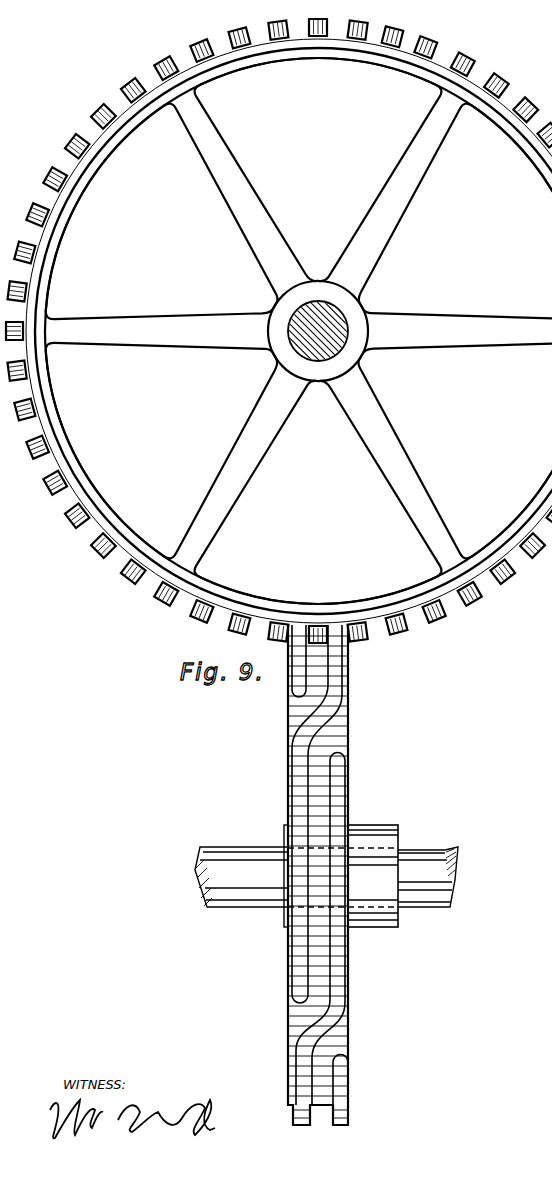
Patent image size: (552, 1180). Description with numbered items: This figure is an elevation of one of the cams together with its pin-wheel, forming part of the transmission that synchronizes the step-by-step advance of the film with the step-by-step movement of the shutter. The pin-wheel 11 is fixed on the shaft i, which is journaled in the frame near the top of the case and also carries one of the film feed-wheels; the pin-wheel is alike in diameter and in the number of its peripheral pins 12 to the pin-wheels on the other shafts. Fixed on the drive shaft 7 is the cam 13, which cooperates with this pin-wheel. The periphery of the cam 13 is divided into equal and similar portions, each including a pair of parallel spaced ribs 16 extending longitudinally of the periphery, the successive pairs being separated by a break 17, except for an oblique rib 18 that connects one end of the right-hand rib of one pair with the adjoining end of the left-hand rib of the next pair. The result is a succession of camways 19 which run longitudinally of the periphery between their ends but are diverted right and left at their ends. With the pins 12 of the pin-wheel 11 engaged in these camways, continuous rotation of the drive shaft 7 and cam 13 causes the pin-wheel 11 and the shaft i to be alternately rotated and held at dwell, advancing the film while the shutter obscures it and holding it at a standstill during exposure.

The drive shaft 7 is at (318, 331).
The pin-wheel 11 is at (289, 331).
The peripheral pins 12 is at (279, 331).
The cam 13 is at (289, 742).
The parallel spaced ribs 16 is at (300, 827).
The break 17 is at (346, 725).
The oblique rib 18 is at (322, 722).
The camways 19 is at (343, 860).
The shaft i is at (326, 864).